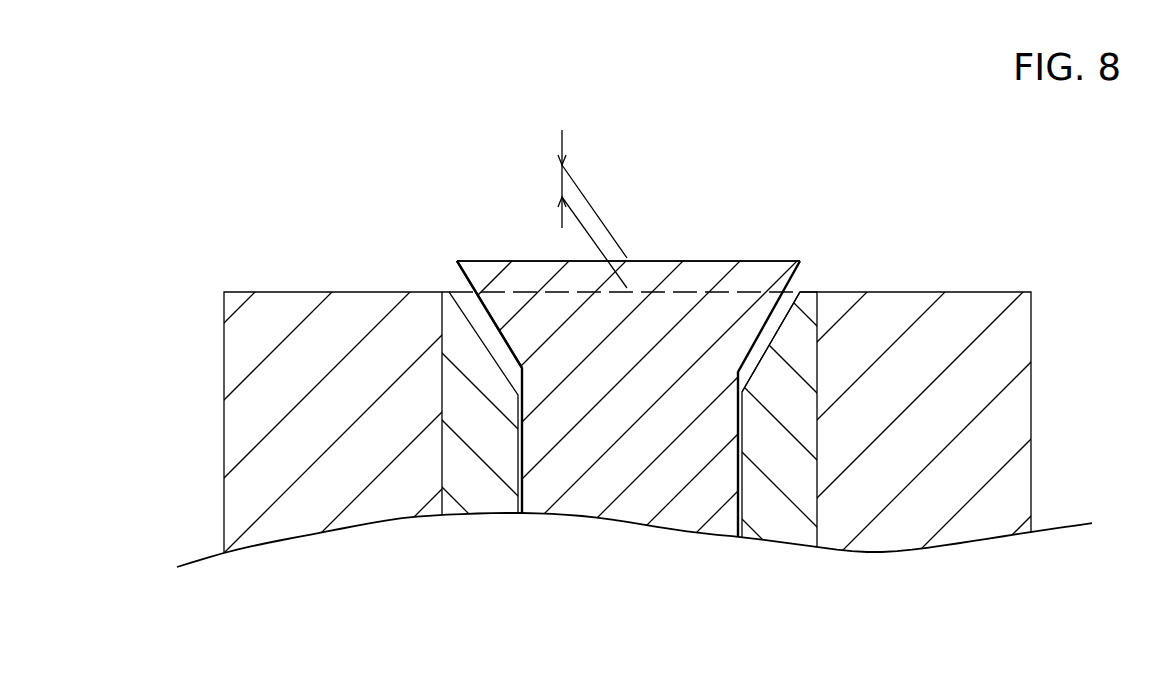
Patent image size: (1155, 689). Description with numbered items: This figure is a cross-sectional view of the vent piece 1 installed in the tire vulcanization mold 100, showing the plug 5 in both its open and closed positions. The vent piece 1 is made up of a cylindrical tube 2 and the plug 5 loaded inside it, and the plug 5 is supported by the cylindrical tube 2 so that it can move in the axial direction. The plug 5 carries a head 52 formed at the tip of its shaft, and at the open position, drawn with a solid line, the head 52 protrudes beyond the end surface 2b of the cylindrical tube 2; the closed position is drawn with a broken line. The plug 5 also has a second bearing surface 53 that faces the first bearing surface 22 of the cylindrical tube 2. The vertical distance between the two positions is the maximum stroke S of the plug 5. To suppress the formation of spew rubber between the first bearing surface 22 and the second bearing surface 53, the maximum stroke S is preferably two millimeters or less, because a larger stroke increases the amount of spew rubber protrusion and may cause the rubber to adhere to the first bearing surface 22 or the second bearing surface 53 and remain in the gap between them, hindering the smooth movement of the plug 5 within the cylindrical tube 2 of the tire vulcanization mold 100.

The vent piece 1 is at (820, 364).
The cylindrical tube 2 is at (777, 507).
The end surface of cylindrical portion 2b is at (808, 292).
The first bearing surface 22 is at (776, 328).
The plug 5 is at (618, 473).
The head 52 is at (692, 262).
The second bearing surface 53 is at (493, 329).
The tire vulcanization mold 100 is at (978, 372).
The maximum stroke S is at (581, 209).